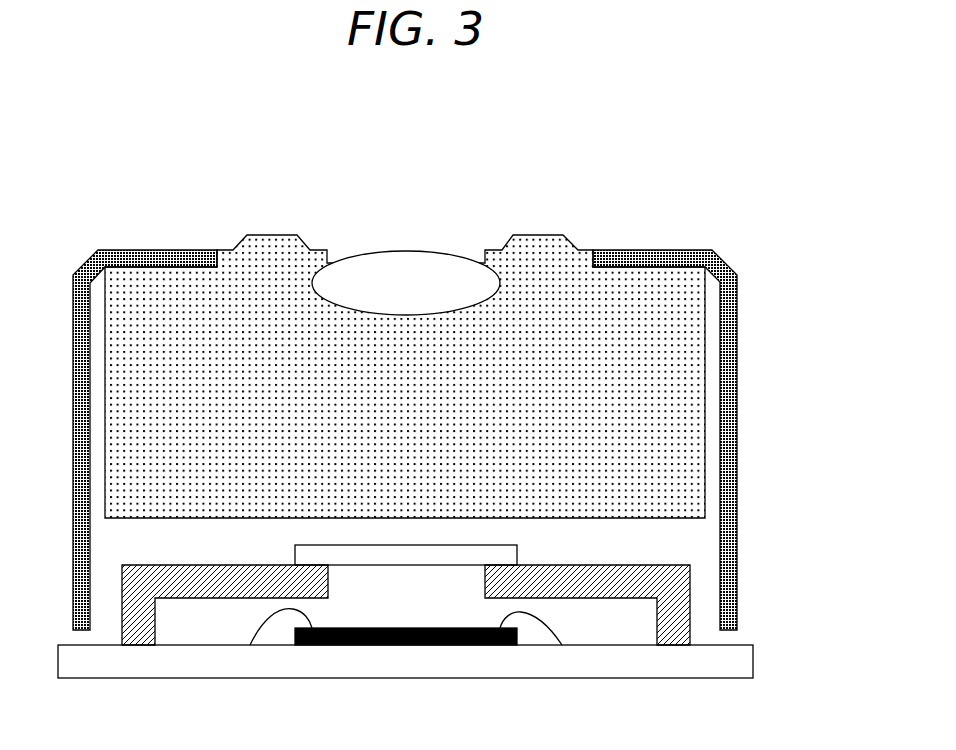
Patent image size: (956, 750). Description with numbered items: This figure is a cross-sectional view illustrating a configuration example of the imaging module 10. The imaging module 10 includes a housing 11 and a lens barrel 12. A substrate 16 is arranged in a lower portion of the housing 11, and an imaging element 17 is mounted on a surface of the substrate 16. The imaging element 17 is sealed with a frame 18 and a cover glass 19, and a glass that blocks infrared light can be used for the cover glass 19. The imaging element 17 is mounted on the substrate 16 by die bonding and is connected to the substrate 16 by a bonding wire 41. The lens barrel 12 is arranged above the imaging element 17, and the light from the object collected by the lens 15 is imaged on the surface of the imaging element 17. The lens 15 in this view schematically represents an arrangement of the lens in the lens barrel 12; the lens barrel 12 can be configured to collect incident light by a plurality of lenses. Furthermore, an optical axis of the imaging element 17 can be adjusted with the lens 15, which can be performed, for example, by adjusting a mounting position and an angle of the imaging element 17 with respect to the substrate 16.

The imaging module 10 is at (765, 188).
The housing 11 is at (168, 250).
The lens barrel 12 is at (273, 235).
The lens 15 is at (408, 251).
The substrate 16 is at (515, 678).
The imaging element 17 is at (410, 628).
The frame 18 is at (168, 565).
The cover glass 19 is at (297, 560).
The bonding wire 41 is at (253, 636).